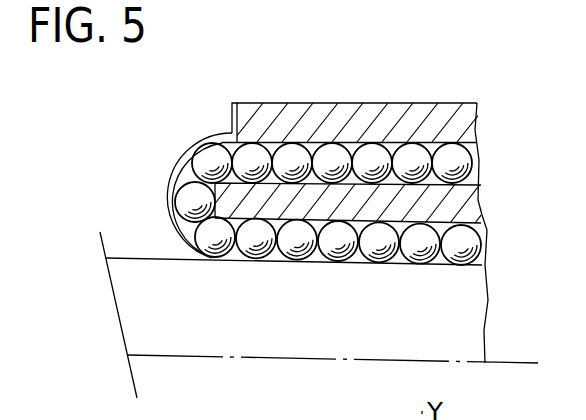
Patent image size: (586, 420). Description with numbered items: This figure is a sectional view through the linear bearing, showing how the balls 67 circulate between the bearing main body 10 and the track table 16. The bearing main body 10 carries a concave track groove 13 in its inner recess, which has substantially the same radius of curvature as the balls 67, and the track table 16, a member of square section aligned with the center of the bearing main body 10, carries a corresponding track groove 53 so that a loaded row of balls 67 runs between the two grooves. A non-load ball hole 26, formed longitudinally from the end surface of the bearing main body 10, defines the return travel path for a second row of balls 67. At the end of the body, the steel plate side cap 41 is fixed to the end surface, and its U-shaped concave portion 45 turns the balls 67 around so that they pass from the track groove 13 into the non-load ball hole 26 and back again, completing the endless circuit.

The bearing main body 10 is at (384, 98).
The non-load ball hole 26 is at (273, 140).
The side cap 41 is at (189, 140).
The U-shaped concave portion 45 is at (172, 178).
The track groove 13 is at (260, 232).
The balls 67 is at (462, 169).
The track groove 53 is at (202, 258).
The track table 16 is at (473, 297).